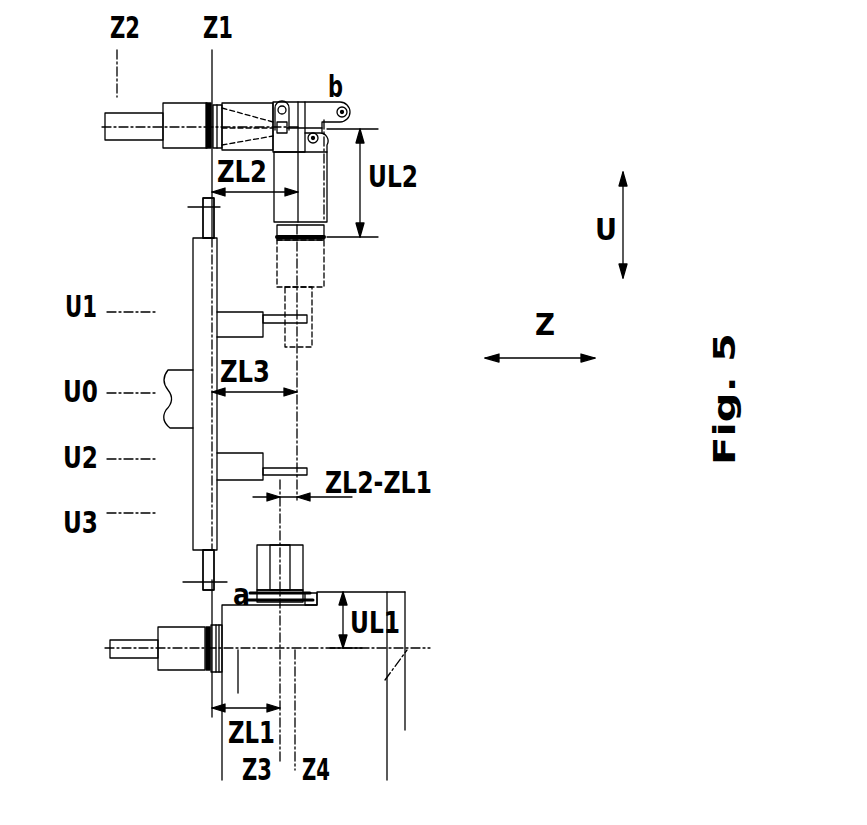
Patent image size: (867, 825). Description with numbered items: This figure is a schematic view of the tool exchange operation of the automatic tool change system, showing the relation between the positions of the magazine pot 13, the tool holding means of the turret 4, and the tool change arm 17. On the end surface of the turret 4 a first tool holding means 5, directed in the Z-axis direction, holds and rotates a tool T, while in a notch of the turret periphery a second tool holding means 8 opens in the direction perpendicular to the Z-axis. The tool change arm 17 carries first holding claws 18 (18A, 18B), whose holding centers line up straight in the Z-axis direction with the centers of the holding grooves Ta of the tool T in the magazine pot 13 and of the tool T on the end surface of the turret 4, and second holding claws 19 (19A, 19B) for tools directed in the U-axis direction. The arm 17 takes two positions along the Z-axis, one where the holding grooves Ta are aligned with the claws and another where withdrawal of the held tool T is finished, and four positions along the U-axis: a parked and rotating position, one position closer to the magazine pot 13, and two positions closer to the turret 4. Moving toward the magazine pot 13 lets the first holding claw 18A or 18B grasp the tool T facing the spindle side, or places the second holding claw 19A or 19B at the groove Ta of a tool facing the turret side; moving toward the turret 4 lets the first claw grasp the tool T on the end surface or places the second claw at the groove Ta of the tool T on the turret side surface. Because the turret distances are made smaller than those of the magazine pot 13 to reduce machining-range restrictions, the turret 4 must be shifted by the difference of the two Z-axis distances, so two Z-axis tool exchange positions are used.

The turret 4 is at (388, 678).
The first tool holding means 5 is at (222, 680).
The second tool holding means 8 is at (293, 605).
The magazine pot 13 is at (272, 102).
The tool change arm 17 is at (202, 350).
The first holding claw 18 is at (203, 180).
The first holding claw 18A is at (202, 222).
The first holding claw 18B is at (203, 570).
The second holding claw 19 is at (205, 132).
The second holding claw 19A is at (265, 324).
The second holding claw 19B is at (288, 464).
The tool T is at (183, 113).
The holding groove Ta is at (222, 104).